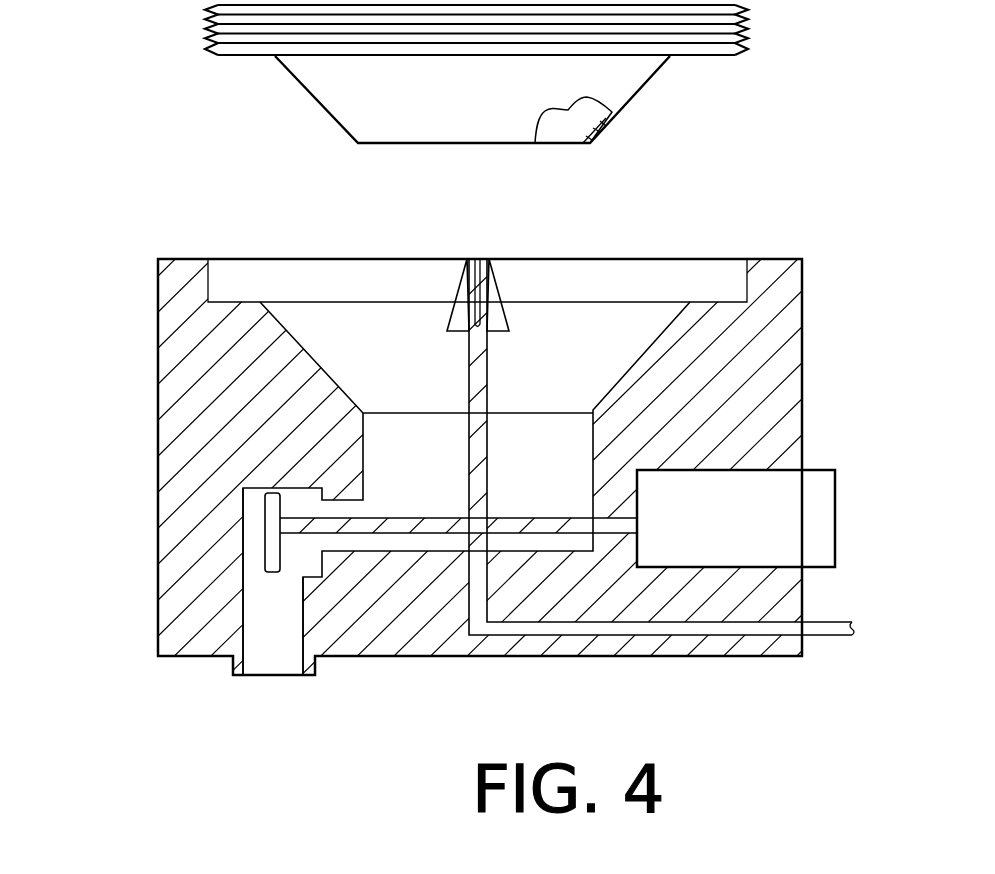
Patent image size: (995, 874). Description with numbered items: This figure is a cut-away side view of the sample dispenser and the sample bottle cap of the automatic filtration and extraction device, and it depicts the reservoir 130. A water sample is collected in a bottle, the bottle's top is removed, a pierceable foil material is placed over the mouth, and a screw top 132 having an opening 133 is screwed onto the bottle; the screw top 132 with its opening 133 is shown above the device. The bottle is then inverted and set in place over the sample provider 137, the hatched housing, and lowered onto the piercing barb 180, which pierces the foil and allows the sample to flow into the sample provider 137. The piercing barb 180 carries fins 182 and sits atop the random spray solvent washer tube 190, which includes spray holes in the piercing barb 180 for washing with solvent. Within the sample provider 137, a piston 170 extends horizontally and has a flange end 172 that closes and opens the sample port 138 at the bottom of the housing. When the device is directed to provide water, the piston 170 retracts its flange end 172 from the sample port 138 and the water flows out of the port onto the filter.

The reservoir 130 is at (567, 478).
The screw top 132 is at (310, 94).
The opening 133 is at (563, 145).
The sample provider 137 is at (158, 345).
The sample port 138 is at (262, 665).
The piston 170 is at (428, 518).
The flange end 172 is at (274, 573).
The piercing barb 180 is at (469, 343).
The fins 182 is at (460, 288).
The random spray solvent washer tube 190 is at (487, 392).